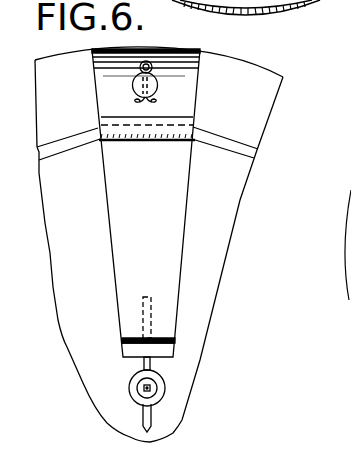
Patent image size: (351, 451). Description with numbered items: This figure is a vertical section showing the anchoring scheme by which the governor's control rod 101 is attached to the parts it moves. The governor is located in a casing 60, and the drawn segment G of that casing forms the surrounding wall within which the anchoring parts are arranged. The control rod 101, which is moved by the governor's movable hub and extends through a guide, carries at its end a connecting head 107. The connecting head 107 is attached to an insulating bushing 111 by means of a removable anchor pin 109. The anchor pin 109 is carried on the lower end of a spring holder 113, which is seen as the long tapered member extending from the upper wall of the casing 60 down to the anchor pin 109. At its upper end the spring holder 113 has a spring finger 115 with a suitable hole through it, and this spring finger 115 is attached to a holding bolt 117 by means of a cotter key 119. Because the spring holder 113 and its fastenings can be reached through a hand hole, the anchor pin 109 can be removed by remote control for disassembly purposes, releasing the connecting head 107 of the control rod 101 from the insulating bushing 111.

The casing 60 is at (262, 127).
The gore wedge G is at (243, 203).
The spring holder 113 is at (178, 211).
The spring finger 115 is at (202, 57).
The holding bolt 117 is at (158, 86).
The cotter key 119 is at (135, 100).
The removable anchor pin 109 is at (144, 366).
The insulating bushing 111 is at (129, 386).
The connecting head 107 is at (158, 392).
The control rod 101 is at (141, 391).